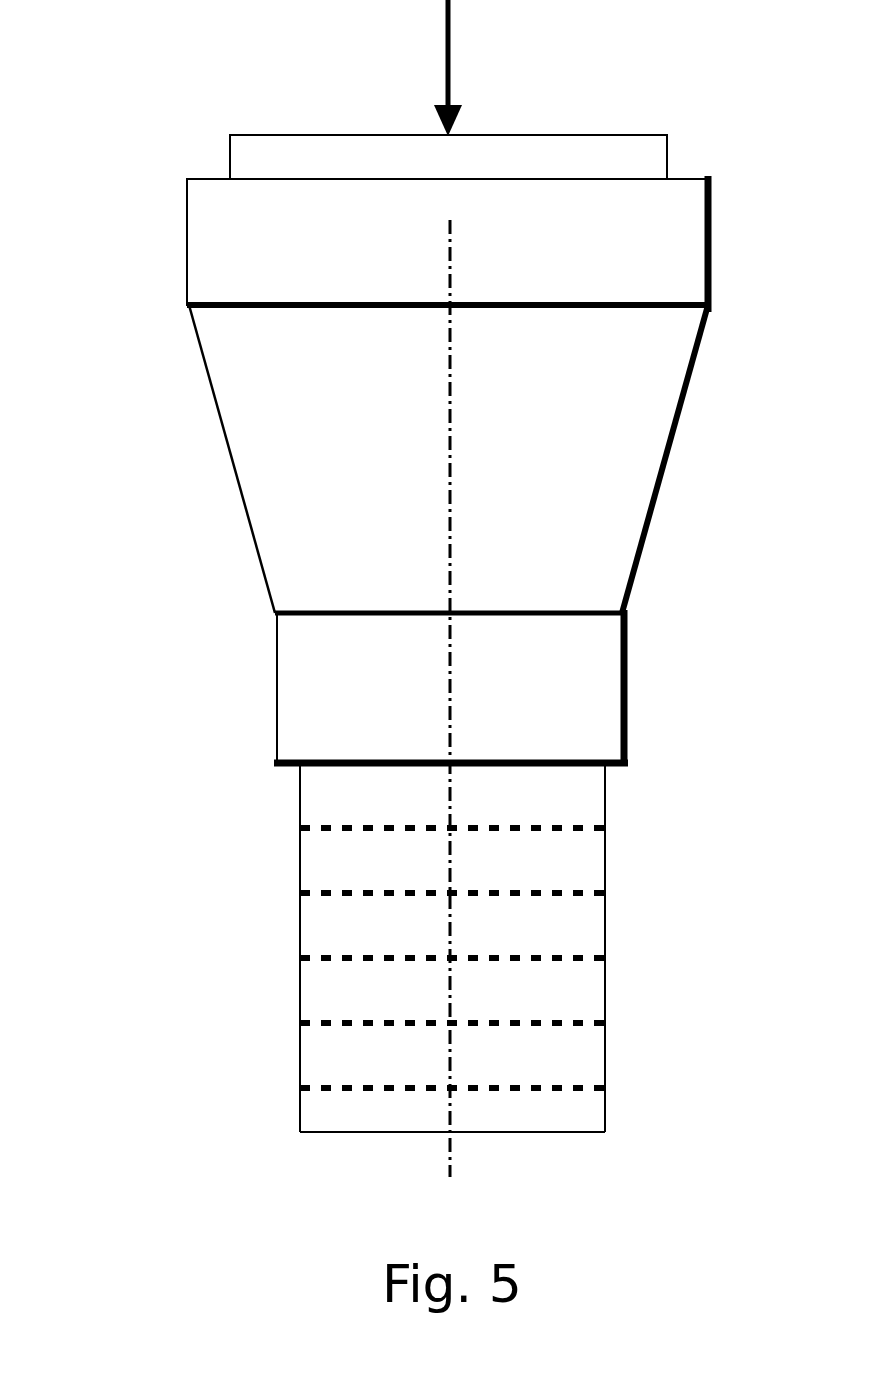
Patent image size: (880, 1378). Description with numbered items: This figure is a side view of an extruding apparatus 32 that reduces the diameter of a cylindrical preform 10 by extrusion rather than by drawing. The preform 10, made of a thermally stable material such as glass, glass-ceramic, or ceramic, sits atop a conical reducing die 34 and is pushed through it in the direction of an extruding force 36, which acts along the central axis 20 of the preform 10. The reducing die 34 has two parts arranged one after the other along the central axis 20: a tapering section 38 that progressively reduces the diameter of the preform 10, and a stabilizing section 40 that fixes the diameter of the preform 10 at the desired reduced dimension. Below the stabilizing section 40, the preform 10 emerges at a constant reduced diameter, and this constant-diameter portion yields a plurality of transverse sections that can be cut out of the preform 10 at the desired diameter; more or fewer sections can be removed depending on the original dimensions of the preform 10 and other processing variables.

The cylindrical preform 10 is at (350, 133).
The central axis 20 is at (450, 362).
The extruding apparatus 32 is at (140, 178).
The conical reducing die 34 is at (449, 244).
The extruding force 36 is at (452, 33).
The tapering section 38 is at (603, 478).
The stabilizing section 40 is at (567, 676).